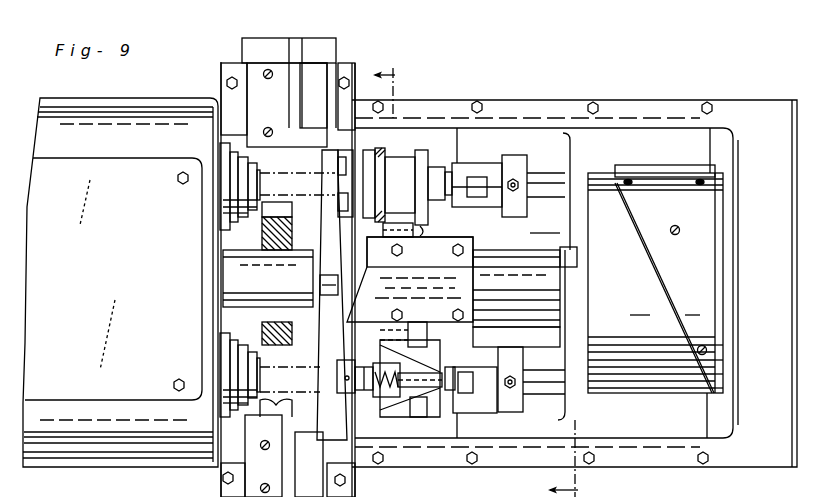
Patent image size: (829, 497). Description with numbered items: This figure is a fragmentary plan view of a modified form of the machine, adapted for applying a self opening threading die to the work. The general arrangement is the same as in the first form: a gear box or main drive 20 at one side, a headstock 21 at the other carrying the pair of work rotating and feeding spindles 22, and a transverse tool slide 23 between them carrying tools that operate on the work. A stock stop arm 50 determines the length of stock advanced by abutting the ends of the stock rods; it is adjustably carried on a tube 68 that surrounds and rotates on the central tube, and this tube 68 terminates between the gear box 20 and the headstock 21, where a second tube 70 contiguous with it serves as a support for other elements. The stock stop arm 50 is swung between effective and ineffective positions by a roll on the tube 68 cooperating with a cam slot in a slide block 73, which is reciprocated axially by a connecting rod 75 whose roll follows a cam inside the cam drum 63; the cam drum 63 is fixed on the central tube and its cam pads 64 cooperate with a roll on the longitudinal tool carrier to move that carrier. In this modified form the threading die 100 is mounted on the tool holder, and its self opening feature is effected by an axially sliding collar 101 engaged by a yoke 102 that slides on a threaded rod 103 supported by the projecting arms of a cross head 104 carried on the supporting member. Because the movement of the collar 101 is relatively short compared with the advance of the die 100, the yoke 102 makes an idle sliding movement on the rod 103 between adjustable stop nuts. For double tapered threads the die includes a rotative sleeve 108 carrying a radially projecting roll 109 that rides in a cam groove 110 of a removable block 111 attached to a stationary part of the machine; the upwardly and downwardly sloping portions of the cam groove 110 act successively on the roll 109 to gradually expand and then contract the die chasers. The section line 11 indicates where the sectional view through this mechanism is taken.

The gear box 20 is at (772, 95).
The head stock 21 is at (88, 94).
The spindles 22 is at (226, 193).
The transverse tool slide 23 is at (346, 50).
The section line 11 is at (475, 277).
The stock stop arm 50 is at (326, 234).
The tube 68 is at (261, 309).
The second tube 70 is at (560, 236).
The slide block 73 is at (483, 300).
The connecting rod 75 is at (536, 305).
The threading die 100 is at (451, 289).
The collar 101 is at (400, 162).
The yoke 102 is at (380, 162).
The threaded rod 103 is at (385, 395).
The cross head 104 is at (435, 325).
The sleeve 108 is at (425, 160).
The roll 109 is at (437, 233).
The cam groove 110 is at (412, 322).
The block 111 is at (410, 240).
The cam drum 63 is at (603, 396).
The cam pads 64 is at (657, 172).